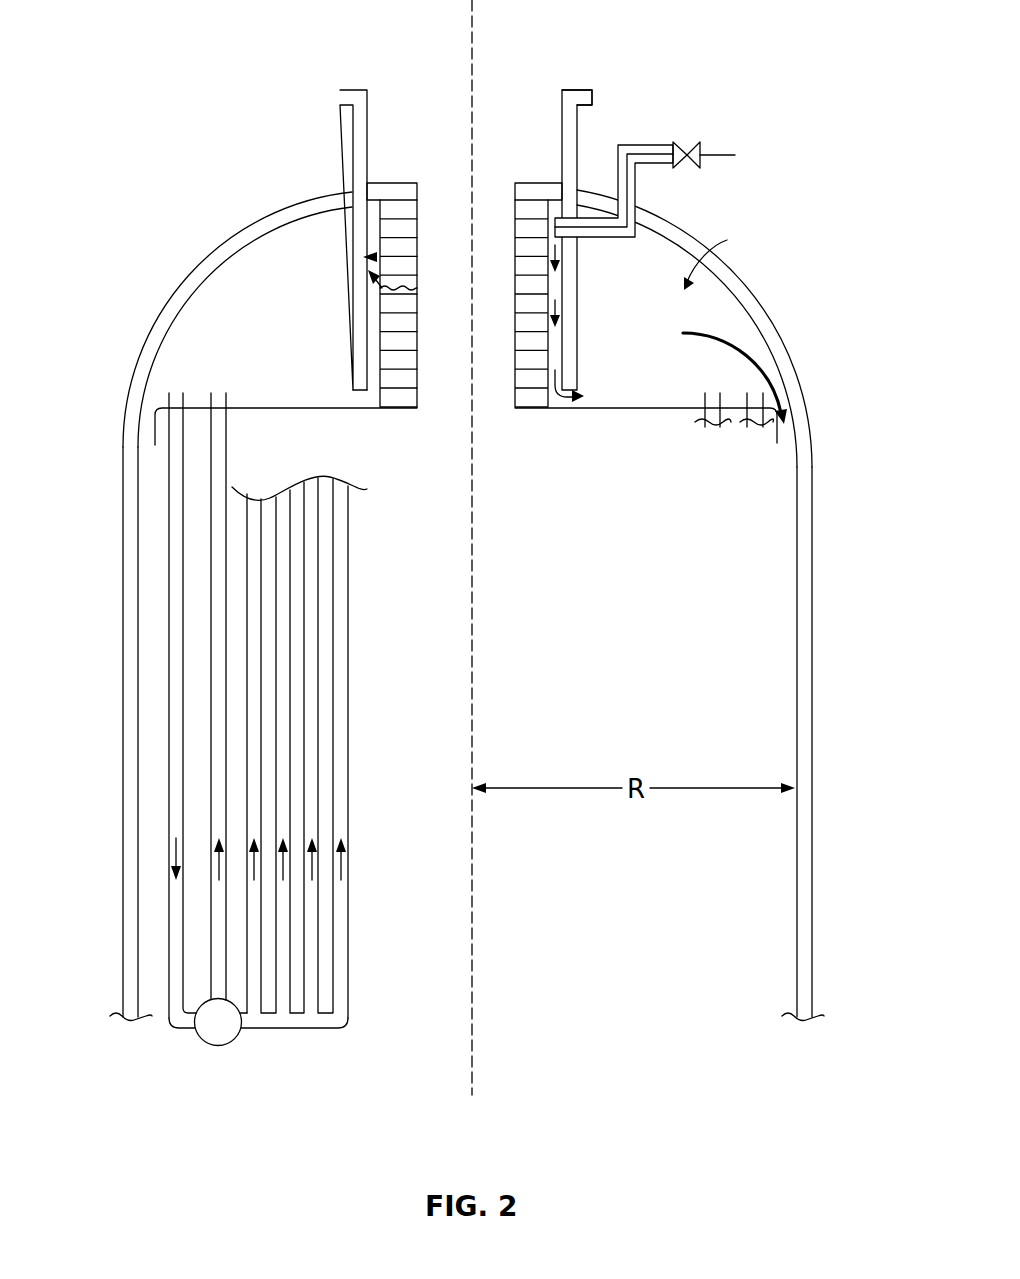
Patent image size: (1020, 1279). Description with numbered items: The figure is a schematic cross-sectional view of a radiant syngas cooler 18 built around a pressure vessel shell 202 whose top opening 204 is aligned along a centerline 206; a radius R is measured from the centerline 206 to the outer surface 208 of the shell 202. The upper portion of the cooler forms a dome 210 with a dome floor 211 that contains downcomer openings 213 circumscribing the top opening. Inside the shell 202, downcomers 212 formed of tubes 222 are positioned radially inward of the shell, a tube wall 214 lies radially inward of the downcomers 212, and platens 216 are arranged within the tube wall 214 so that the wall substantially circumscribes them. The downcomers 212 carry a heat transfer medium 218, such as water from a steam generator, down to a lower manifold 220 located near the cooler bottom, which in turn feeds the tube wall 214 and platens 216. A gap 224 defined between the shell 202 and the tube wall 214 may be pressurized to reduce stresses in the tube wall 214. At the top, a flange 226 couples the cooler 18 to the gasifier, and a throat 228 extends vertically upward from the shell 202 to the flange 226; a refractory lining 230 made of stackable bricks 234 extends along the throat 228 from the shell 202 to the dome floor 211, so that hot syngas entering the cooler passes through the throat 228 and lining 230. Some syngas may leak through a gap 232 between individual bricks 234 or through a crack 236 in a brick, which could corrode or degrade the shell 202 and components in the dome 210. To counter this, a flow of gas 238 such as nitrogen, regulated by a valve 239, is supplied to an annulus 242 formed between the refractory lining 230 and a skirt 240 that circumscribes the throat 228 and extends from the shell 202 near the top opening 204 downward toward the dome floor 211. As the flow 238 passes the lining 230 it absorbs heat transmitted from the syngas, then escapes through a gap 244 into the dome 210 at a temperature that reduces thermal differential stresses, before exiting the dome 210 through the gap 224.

The syngas cooler 18 is at (203, 85).
The pressure vessel shell 202 is at (747, 283).
The top opening 204 is at (520, 48).
The centerline 206 is at (470, 40).
The outer surface 208 is at (808, 747).
The dome 210 is at (718, 250).
The dome floor 211 is at (301, 406).
The downcomers 212 is at (167, 435).
The downcomer openings 213 is at (184, 404).
The tube wall 214 is at (211, 503).
The platens 216 is at (234, 682).
The heat transfer medium 218 is at (178, 577).
The lower manifold 220 is at (270, 1020).
The tubes 222 is at (165, 790).
The gap 224 is at (150, 721).
The flange 226 is at (592, 97).
The throat 228 is at (578, 137).
The refractory lining 230 is at (392, 183).
The gap 232 is at (415, 257).
The bricks 234 is at (378, 265).
The crack 236 is at (415, 287).
The flow of gas 238 is at (653, 158).
The valve 239 is at (690, 150).
The skirt 240 is at (582, 277).
The annulus 242 is at (553, 287).
The gap 244 is at (360, 400).